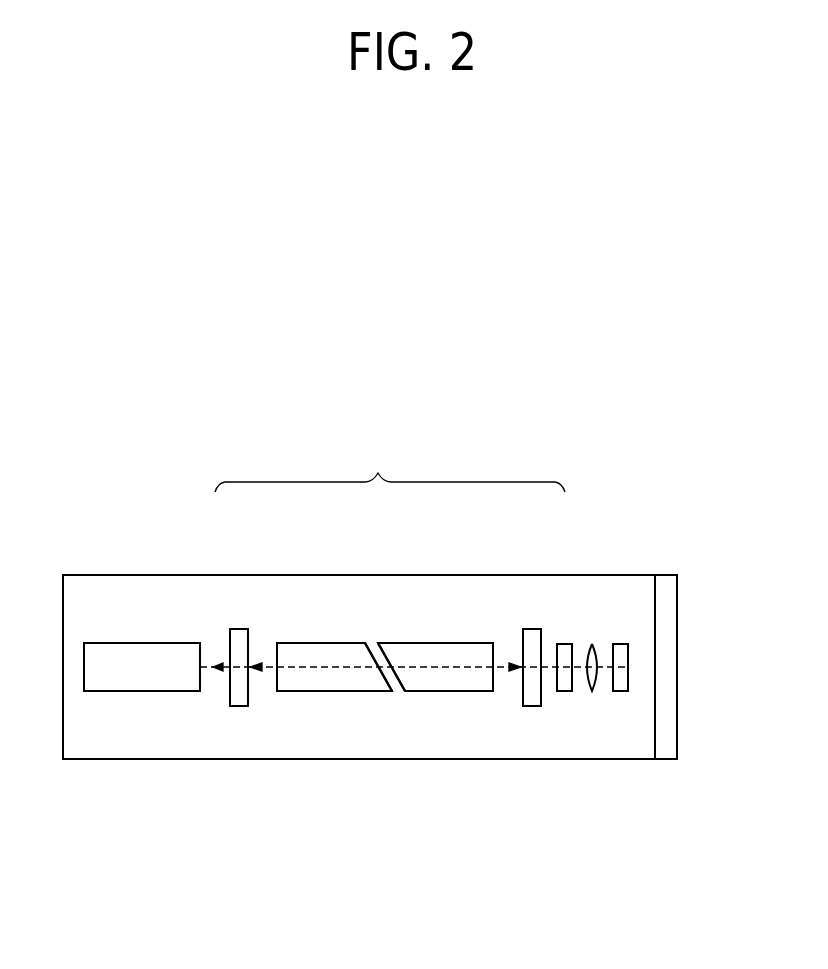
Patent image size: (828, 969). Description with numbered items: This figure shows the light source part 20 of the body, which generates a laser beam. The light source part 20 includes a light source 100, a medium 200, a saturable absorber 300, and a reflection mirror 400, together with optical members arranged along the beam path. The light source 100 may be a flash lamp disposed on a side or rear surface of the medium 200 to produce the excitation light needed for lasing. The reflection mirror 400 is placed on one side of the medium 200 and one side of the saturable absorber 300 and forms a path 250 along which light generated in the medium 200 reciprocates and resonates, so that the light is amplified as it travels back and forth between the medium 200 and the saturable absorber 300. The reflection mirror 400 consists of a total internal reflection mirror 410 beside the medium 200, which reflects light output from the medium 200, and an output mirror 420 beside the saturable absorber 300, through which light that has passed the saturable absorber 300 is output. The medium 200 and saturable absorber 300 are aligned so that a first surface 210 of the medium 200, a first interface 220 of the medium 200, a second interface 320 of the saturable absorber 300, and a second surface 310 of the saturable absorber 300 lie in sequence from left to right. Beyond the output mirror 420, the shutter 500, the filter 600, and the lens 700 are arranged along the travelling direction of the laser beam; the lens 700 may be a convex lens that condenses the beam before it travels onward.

The light source part 20 is at (428, 322).
The light source 100 is at (119, 643).
The medium 200 is at (300, 691).
The first surface 210 is at (275, 683).
The first interface 220 is at (383, 690).
The path 250 is at (327, 667).
The saturable absorber 300 is at (478, 691).
The second surface 310 is at (497, 689).
The second interface 320 is at (396, 690).
The reflection mirror 400 is at (390, 468).
The total internal reflection mirror 410 is at (238, 629).
The output mirror 420 is at (530, 629).
The shutter 500 is at (563, 644).
The filter 600 is at (592, 691).
The lens 700 is at (617, 644).